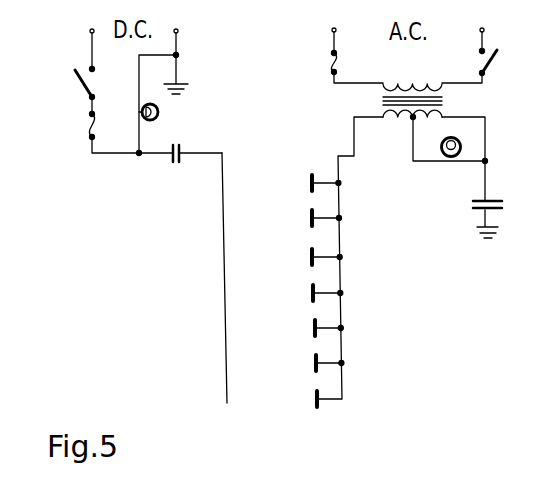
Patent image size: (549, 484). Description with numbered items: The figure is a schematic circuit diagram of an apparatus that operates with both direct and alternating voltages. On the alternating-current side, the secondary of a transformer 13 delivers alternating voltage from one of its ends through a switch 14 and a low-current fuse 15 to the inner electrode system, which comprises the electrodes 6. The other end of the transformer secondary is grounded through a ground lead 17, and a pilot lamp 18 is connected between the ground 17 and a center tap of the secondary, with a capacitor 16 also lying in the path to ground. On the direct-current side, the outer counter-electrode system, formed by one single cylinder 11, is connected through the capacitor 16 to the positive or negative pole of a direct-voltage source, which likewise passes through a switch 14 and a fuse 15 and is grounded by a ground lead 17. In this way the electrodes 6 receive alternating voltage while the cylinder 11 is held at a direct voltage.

The electrodes 6 is at (315, 250).
The cylinder 11 is at (225, 302).
The transformer 13 is at (444, 97).
The switch 14 is at (87, 87).
The low-current fuse 15 is at (90, 134).
The capacitor 16 is at (173, 163).
The ground lead 17 is at (187, 89).
The pilot lamp 18 is at (159, 116).